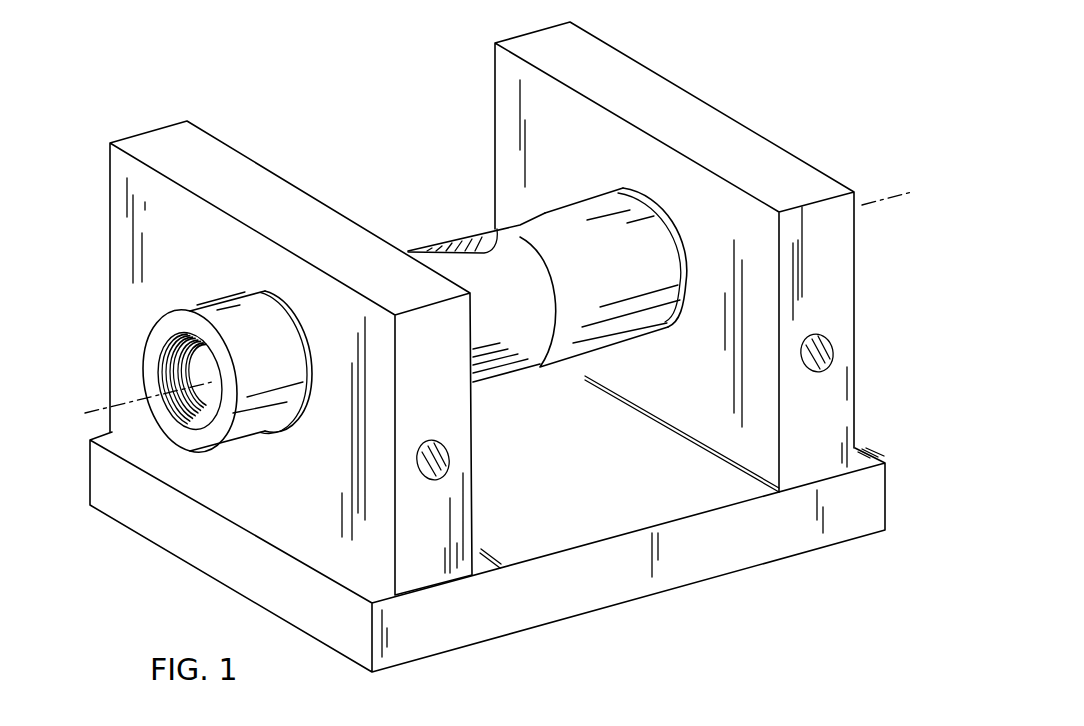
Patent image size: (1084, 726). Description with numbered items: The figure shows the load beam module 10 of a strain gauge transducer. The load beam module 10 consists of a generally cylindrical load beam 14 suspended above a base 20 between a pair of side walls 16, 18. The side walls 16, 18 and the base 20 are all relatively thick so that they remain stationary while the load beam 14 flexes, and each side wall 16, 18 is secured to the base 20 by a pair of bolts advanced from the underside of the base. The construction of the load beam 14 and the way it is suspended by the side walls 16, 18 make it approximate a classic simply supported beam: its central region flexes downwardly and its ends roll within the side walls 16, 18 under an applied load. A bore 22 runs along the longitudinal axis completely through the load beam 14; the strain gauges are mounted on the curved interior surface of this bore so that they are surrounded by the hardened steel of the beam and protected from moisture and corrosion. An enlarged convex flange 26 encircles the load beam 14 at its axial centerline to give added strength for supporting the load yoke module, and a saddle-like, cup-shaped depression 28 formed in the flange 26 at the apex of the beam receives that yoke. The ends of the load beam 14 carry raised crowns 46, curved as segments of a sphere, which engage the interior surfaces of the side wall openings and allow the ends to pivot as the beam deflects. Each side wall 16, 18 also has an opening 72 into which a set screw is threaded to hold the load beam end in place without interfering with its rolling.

The load beam module 10 is at (329, 133).
The load beam 14 is at (547, 217).
The side wall 16 is at (657, 91).
The side wall 18 is at (202, 147).
The base 20 is at (712, 567).
The bore 22 is at (180, 375).
The convex flange 26 is at (521, 269).
The cup-shaped depression 28 is at (460, 247).
The raised crown 46 is at (267, 300).
The opening 72 is at (430, 483).